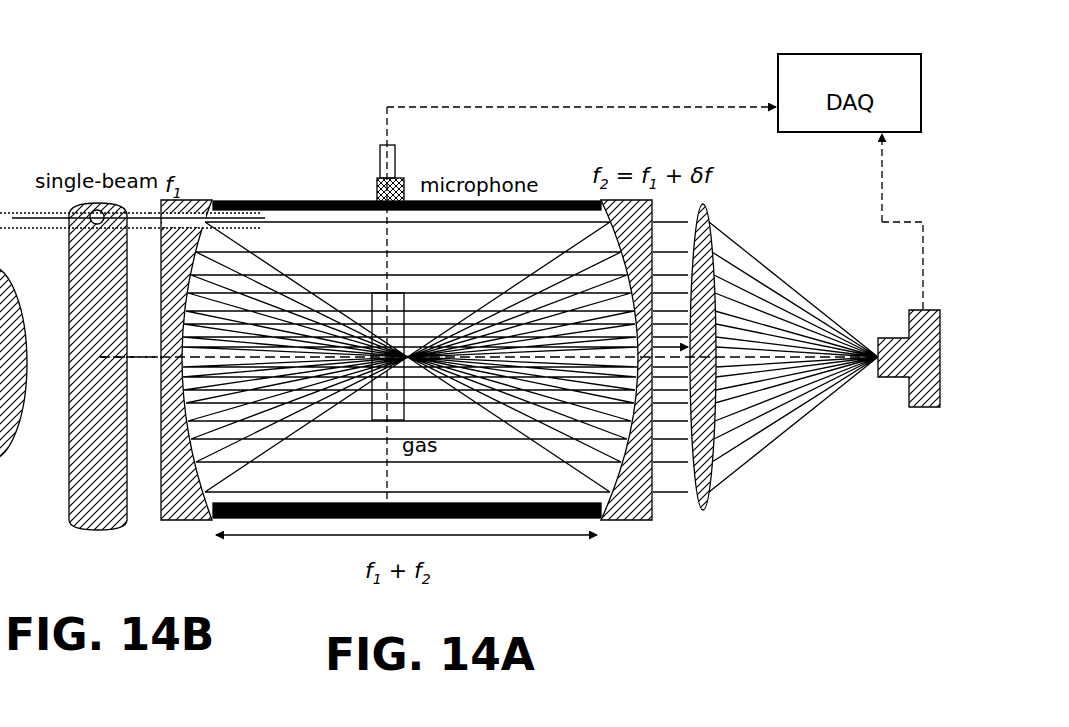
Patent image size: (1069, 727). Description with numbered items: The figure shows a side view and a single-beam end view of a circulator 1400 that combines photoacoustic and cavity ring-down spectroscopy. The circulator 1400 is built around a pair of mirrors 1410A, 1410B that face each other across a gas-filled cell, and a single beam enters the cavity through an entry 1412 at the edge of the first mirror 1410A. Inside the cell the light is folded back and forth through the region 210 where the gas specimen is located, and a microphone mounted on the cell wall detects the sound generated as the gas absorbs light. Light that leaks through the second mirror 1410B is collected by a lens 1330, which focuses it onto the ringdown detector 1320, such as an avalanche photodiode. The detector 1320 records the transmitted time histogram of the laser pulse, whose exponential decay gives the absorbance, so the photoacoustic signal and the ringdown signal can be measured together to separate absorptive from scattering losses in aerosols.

In FIG. 14A, the circulator 1400 is at (303, 68).
In FIG. 14B, the first concave mirror 1410A is at (69, 492).
In FIG. 14A, the first concave mirror 1410A is at (180, 522).
In FIG. 14A, the second concave mirror 1410B is at (622, 520).
In FIG. 14A, the beam entry aperture 1412 is at (140, 218).
In FIG. 14A, the sample gas region 210 is at (372, 318).
In FIG. 14A, the lens 1330 is at (707, 212).
In FIG. 14A, the ringdown detector 1320 is at (943, 413).